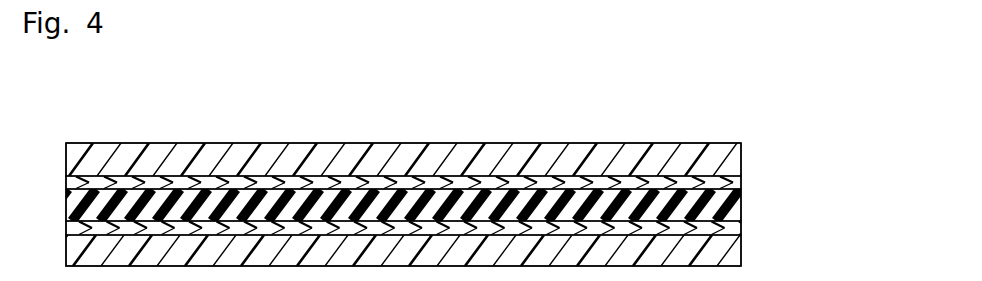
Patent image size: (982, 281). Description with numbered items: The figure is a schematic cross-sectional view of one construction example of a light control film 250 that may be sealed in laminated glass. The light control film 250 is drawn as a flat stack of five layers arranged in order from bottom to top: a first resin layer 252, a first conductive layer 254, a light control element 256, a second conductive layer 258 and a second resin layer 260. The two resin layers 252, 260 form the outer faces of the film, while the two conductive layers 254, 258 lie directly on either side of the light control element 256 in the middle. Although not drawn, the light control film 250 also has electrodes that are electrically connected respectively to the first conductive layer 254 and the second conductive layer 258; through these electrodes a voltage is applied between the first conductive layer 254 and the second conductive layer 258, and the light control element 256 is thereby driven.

The light control film 250 is at (665, 93).
The first resin layer 252 is at (728, 248).
The first conductive layer 254 is at (728, 224).
The light control element 256 is at (728, 203).
The second conductive layer 258 is at (727, 178).
The second resin layer 260 is at (727, 155).